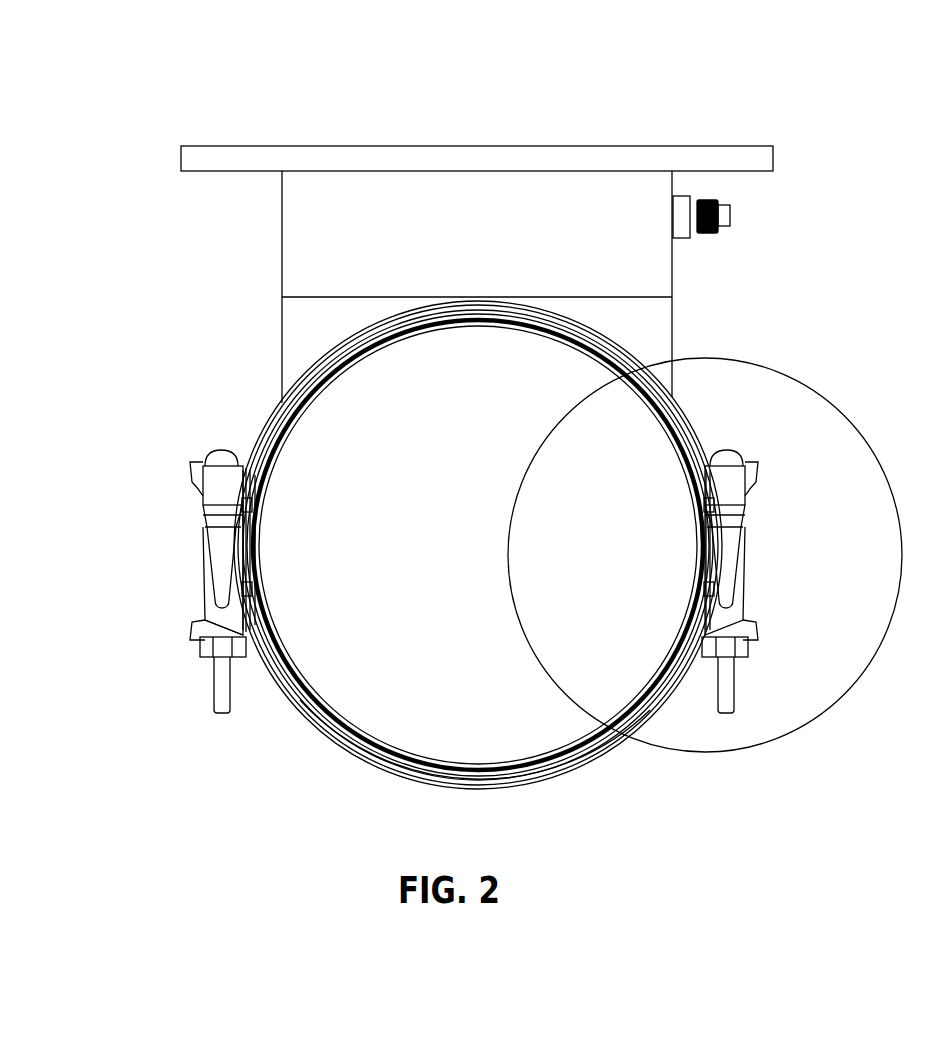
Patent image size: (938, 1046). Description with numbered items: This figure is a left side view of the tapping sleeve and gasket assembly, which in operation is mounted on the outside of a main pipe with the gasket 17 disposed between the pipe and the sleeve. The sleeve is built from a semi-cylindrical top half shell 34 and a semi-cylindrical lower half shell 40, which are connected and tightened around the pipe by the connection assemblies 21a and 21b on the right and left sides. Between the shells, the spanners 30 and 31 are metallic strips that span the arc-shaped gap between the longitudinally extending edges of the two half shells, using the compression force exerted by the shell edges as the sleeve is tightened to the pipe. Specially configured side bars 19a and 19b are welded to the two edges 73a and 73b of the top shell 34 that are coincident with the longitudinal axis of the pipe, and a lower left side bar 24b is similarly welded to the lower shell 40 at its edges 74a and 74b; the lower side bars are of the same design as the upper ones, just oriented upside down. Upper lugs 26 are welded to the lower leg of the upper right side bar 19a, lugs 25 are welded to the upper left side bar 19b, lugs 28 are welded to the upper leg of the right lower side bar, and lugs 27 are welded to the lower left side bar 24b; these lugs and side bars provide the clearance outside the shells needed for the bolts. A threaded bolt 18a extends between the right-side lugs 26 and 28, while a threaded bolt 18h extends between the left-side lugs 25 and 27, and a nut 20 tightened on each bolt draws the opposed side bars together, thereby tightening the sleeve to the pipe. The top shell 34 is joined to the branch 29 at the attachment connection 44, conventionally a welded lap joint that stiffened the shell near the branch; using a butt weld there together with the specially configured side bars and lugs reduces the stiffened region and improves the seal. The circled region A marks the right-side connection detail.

The gasket 17 is at (372, 352).
The threaded bolt 18a is at (727, 700).
The threaded bolt 18h is at (220, 693).
The upper right side bar 19a is at (716, 586).
The upper left side bar 19b is at (173, 553).
The nut 20 is at (200, 650).
The connection assembly 21a is at (757, 545).
The connection assembly 21b is at (188, 533).
The lower left side bar 24b is at (255, 665).
The lug 25 is at (192, 468).
The upper lug 26 is at (757, 475).
The lug 27 is at (197, 624).
The lug 28 is at (758, 628).
The branch 29 is at (226, 250).
The spanner 30 is at (250, 548).
The spanner 31 is at (704, 552).
The top half shell 34 is at (270, 412).
The lower half shell 40 is at (445, 787).
The attachment connection 44 is at (675, 349).
The edge of top shell 73a is at (700, 506).
The edge of top shell 73b is at (258, 505).
The edge of lower shell 74a is at (700, 586).
The edge of lower shell 74b is at (255, 590).
The detail area A is at (835, 698).